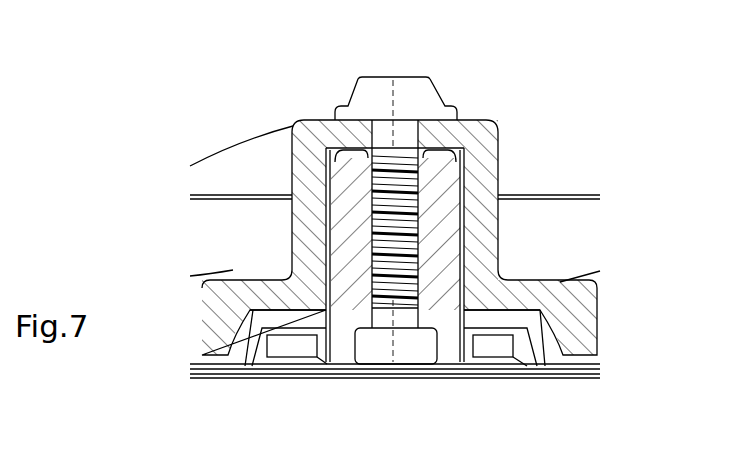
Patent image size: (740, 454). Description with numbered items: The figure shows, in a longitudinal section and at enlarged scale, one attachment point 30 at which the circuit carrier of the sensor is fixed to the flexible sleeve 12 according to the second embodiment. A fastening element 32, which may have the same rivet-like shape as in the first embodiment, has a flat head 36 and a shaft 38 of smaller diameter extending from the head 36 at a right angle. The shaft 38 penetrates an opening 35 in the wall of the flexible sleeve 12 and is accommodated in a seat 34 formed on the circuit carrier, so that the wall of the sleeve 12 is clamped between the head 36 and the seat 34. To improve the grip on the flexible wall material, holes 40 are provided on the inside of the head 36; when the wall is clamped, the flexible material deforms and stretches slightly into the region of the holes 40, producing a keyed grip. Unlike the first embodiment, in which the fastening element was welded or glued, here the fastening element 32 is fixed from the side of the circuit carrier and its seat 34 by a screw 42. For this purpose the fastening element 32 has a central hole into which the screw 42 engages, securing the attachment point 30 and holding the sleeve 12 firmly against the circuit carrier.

The attachment point 30 is at (441, 221).
The screw 42 is at (343, 118).
The shaft 38 is at (437, 192).
The seat 34 is at (490, 246).
The opening 35 is at (472, 314).
The holes 40 is at (295, 345).
The head 36 is at (335, 353).
The sleeve 12 is at (567, 365).
The fastening element 32 is at (460, 380).